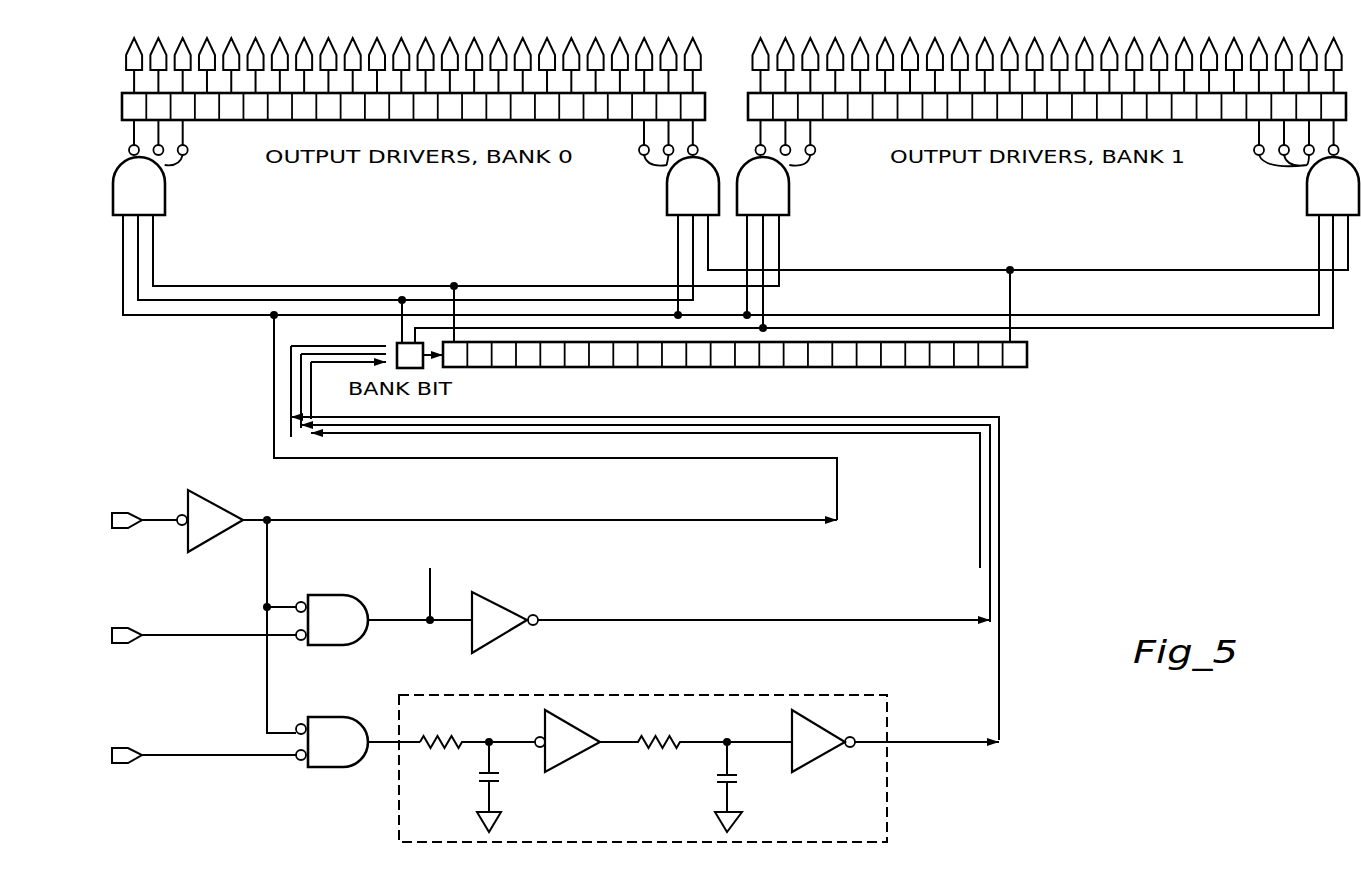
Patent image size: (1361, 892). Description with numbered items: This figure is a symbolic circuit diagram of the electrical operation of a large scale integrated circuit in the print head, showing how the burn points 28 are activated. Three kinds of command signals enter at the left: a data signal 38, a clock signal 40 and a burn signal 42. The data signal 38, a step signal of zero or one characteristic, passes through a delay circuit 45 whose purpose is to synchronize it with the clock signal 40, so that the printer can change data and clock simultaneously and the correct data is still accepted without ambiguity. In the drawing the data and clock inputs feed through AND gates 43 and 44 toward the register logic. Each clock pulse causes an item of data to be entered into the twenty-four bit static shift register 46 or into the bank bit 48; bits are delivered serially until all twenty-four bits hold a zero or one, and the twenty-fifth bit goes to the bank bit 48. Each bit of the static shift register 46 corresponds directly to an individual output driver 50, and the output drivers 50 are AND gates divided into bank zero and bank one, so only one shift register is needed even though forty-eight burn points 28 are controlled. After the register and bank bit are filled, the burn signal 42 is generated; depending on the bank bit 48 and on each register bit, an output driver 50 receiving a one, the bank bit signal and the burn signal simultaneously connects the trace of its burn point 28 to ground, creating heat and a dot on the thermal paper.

The burn points 28 is at (426, 37).
The output drivers 50 is at (149, 194).
The bank bit 48 is at (397, 343).
The 24-bit static shift register 46 is at (926, 401).
The burn signal 42 is at (97, 502).
The clock signal 40 is at (100, 615).
The data signal 38 is at (97, 737).
The clock AND gate 44 is at (343, 631).
The data AND gate 43 is at (343, 753).
The delay circuit 45 is at (626, 803).